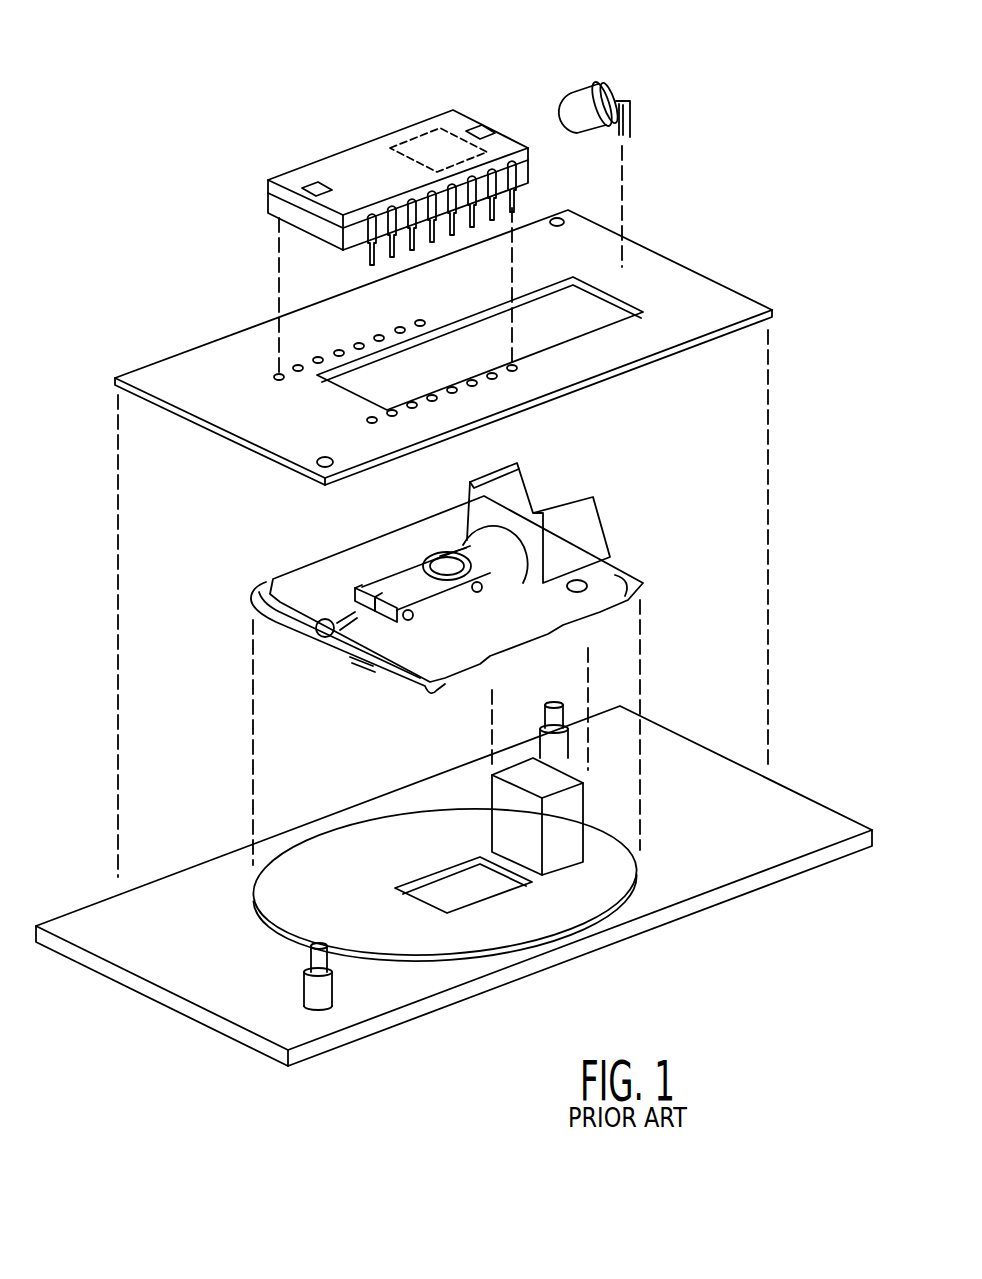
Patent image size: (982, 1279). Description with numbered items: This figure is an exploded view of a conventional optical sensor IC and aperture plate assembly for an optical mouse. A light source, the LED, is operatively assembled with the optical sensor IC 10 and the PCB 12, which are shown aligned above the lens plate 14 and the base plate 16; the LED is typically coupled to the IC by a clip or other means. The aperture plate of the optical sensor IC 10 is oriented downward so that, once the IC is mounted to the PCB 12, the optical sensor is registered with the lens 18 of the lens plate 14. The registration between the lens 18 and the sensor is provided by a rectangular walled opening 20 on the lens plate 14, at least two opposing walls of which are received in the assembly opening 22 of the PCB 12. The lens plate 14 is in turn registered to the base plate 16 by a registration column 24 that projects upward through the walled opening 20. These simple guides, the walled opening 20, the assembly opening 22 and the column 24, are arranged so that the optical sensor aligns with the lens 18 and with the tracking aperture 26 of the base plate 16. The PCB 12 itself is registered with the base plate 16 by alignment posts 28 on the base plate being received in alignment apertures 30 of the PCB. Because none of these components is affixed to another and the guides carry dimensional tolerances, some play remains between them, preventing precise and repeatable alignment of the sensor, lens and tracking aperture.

The optical sensor IC 10 is at (405, 131).
The element LED is at (573, 94).
The PCB 12 is at (662, 255).
The alignment apertures 30 is at (558, 216).
The assembly opening 22 is at (600, 329).
The lens plate 14 is at (292, 566).
The lens 18 is at (445, 567).
The walled opening 20 is at (592, 533).
The base plate 16 is at (780, 803).
The registration column 24 is at (560, 855).
The tracking aperture 26 is at (493, 898).
The alignment posts 28 is at (308, 990).